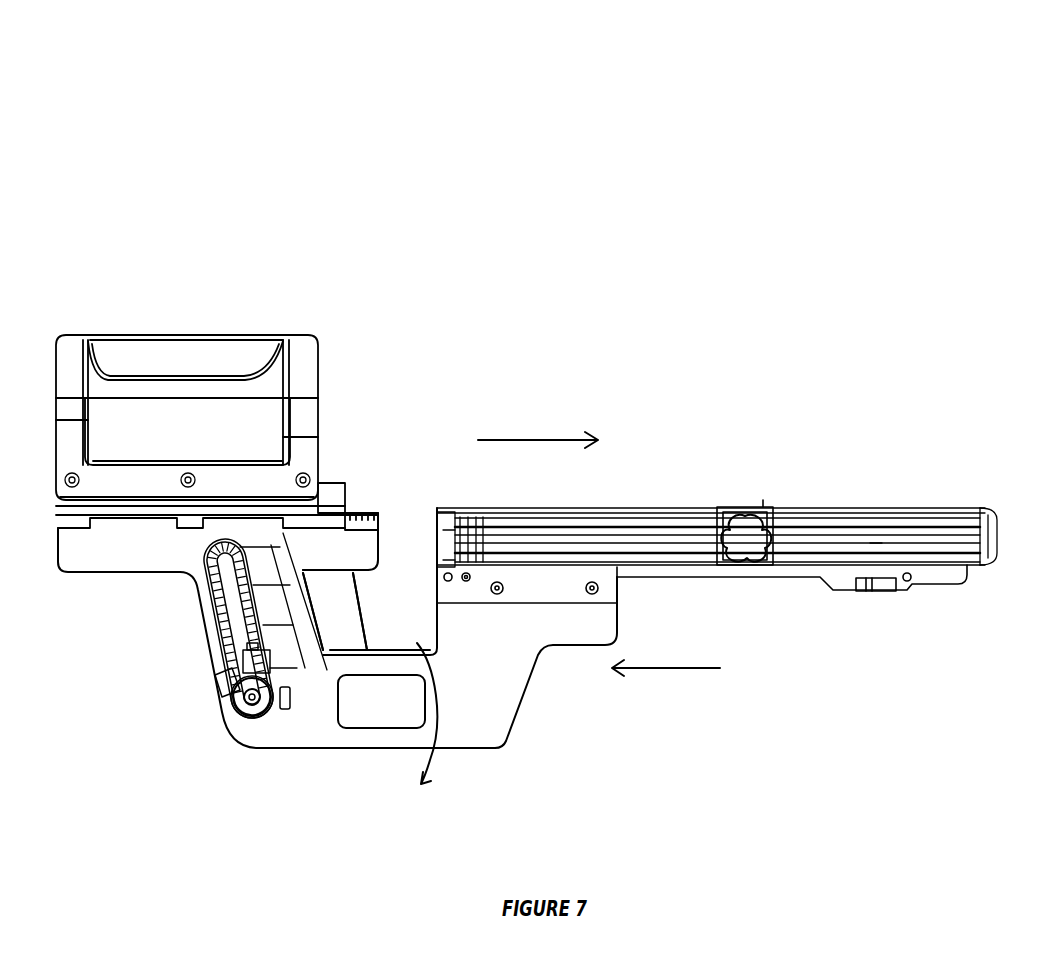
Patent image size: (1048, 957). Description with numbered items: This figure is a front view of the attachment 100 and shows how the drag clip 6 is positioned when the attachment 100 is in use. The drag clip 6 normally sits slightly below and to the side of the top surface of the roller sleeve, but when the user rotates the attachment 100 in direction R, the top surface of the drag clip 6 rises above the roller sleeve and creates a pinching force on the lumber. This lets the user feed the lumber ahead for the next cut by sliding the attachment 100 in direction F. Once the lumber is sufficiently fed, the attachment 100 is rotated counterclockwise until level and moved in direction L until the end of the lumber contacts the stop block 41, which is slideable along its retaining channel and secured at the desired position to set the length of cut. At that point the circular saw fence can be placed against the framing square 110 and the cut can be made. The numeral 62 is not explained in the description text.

The attachment 100 is at (900, 80).
The framing square 110 is at (355, 500).
The handle grip 62 is at (313, 587).
The stop block 41 is at (733, 499).
The drag clip 6 is at (218, 675).